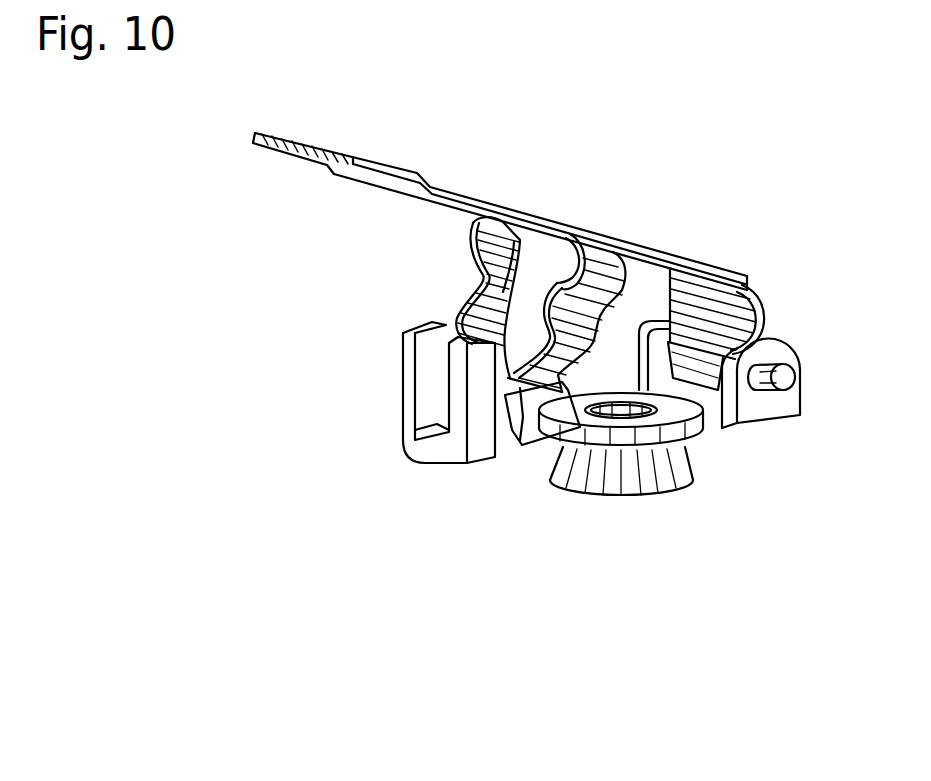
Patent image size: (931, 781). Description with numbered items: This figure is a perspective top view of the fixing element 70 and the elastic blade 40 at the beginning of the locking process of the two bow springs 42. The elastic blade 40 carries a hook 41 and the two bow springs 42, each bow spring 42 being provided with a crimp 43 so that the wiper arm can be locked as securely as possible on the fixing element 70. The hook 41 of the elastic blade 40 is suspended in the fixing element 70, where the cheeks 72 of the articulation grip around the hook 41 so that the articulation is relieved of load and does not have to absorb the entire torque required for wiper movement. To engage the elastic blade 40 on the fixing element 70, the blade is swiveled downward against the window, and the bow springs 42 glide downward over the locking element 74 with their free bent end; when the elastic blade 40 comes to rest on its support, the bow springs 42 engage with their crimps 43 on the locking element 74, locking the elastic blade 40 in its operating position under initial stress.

The elastic blade 40 is at (406, 176).
The hook 41 is at (755, 294).
The bow springs 42 is at (483, 302).
The crimp 43 is at (534, 342).
The fixing element 70 is at (655, 483).
The cheeks 72 is at (790, 349).
The locking element 74 is at (520, 441).